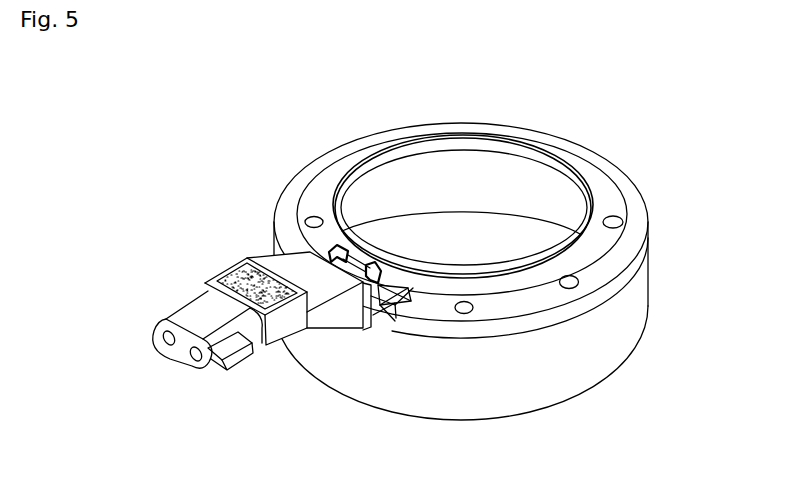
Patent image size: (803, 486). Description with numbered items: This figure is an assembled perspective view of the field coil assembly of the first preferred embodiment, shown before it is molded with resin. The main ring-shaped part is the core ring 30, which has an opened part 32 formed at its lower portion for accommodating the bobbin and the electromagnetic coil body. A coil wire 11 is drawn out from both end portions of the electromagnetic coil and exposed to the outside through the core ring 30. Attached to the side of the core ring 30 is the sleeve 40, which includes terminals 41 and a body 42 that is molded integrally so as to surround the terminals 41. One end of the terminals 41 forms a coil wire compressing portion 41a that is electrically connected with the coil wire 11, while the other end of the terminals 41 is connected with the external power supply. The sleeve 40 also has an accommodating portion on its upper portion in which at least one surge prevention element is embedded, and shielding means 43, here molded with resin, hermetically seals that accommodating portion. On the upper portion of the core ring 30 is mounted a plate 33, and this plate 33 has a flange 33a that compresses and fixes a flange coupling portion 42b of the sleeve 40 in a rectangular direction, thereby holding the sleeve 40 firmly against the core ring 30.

The coil wire 11 is at (396, 278).
The core ring 30 is at (638, 307).
The opened part 32 is at (584, 396).
The plate 33 is at (607, 238).
The flange 33a is at (373, 317).
The sleeve 40 is at (310, 248).
The terminals 41 is at (290, 273).
The coil wire compressing portion 41a is at (376, 283).
The body 42 is at (276, 262).
The flange coupling portion 42b is at (393, 317).
The shielding means 43 is at (249, 274).